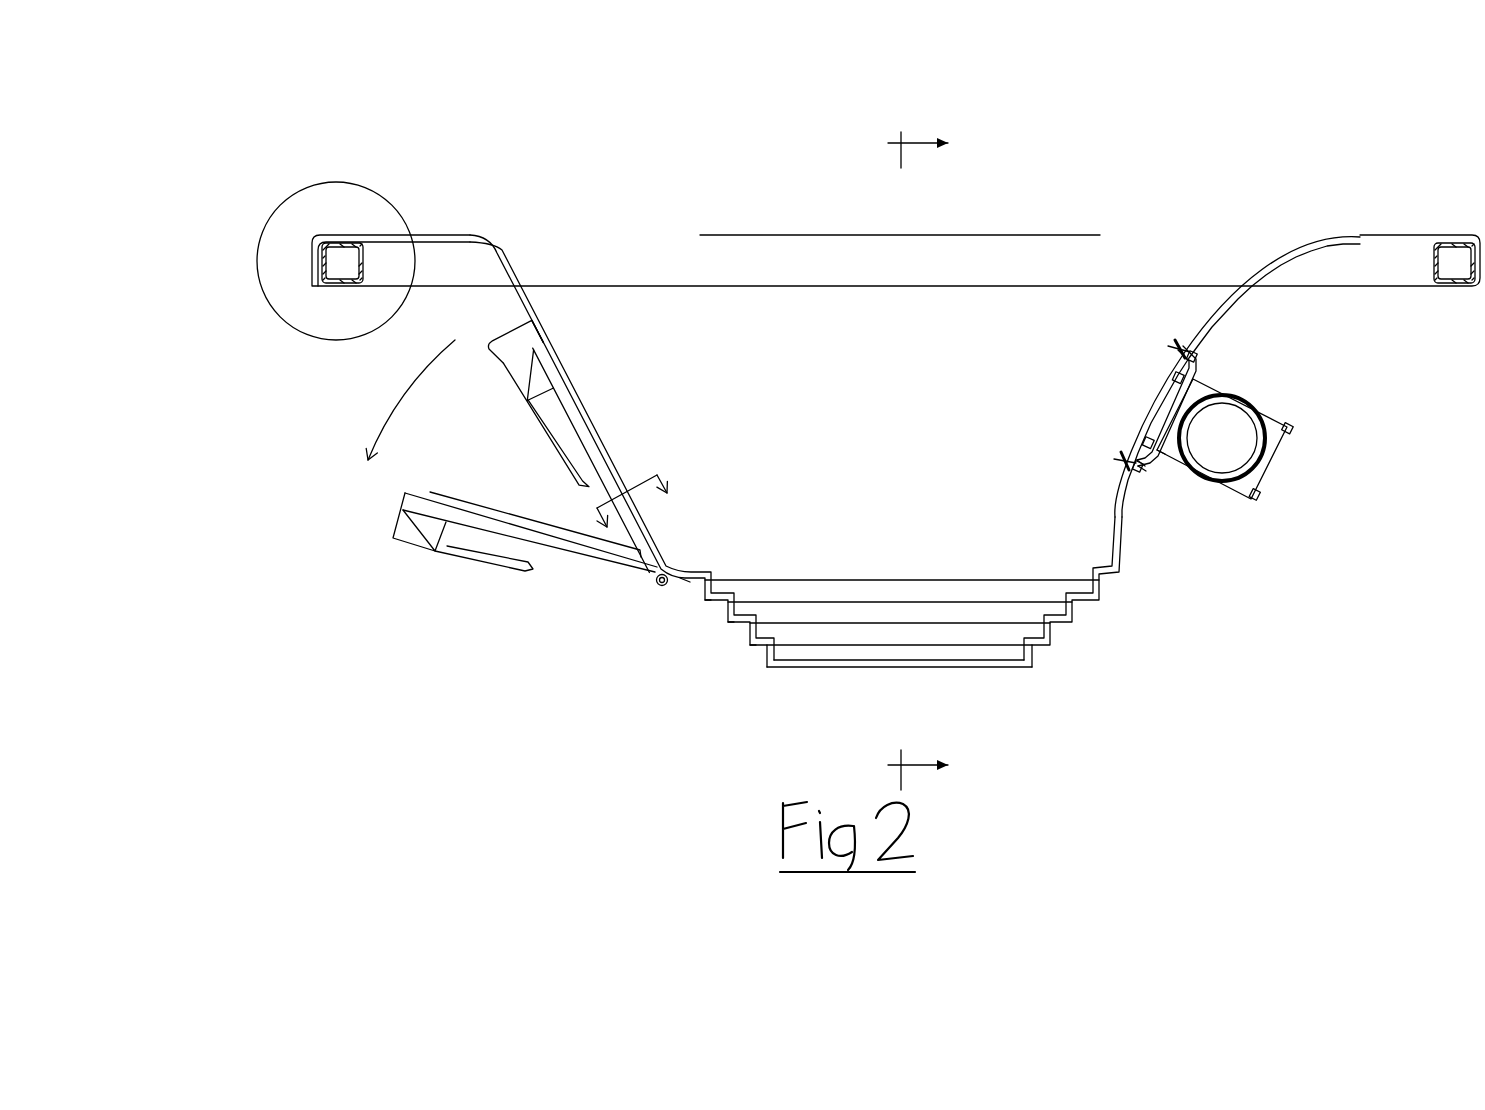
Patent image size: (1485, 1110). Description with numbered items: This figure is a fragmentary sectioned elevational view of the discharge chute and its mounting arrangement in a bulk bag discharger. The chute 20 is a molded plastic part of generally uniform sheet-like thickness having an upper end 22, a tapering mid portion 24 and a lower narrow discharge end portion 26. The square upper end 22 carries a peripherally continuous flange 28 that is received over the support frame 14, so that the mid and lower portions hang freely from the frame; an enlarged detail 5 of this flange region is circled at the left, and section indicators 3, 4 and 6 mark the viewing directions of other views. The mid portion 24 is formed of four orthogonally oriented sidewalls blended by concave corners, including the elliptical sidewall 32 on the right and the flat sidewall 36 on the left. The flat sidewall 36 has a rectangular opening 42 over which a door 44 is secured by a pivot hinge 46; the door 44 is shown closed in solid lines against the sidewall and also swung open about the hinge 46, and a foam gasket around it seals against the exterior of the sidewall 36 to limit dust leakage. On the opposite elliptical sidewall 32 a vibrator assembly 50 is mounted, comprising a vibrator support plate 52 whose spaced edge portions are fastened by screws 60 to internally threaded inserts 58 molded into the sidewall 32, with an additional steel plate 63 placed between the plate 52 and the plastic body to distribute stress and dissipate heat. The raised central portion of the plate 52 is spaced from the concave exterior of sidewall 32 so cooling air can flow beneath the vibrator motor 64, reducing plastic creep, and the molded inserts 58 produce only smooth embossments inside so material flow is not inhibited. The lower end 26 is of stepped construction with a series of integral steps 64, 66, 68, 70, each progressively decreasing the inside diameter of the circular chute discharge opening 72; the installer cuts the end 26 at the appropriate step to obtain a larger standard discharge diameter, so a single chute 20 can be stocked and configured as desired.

The fan mounting region (section) 3 is at (1350, 497).
The section line 4 is at (648, 513).
The detail circle 5 is at (296, 328).
The section line 6 is at (932, 464).
The support frame 14 is at (358, 284).
The chute 20 is at (1172, 177).
The upper end 22 is at (432, 238).
The tapering mid portion 24 is at (1115, 570).
The lower narrow discharge end portion 26 is at (1035, 657).
The peripherally continuous flange 28 is at (316, 262).
The elliptical sidewall 32 is at (1230, 295).
The flat sidewall 36 is at (545, 308).
The rectangular opening 42 is at (557, 359).
The door 44 is at (578, 420).
The pivot hinge 46 is at (655, 585).
The vibrator assembly 50 is at (1292, 429).
The vibrator support plate 52 is at (1222, 399).
The internally threaded inserts 58 is at (1170, 350).
The screws 60 is at (1150, 480).
The steel plate 63 is at (1150, 412).
The step 64 is at (676, 586).
The step 66 is at (715, 603).
The step 68 is at (735, 625).
The step 70 is at (760, 655).
The circular chute discharge opening 72 is at (1022, 656).